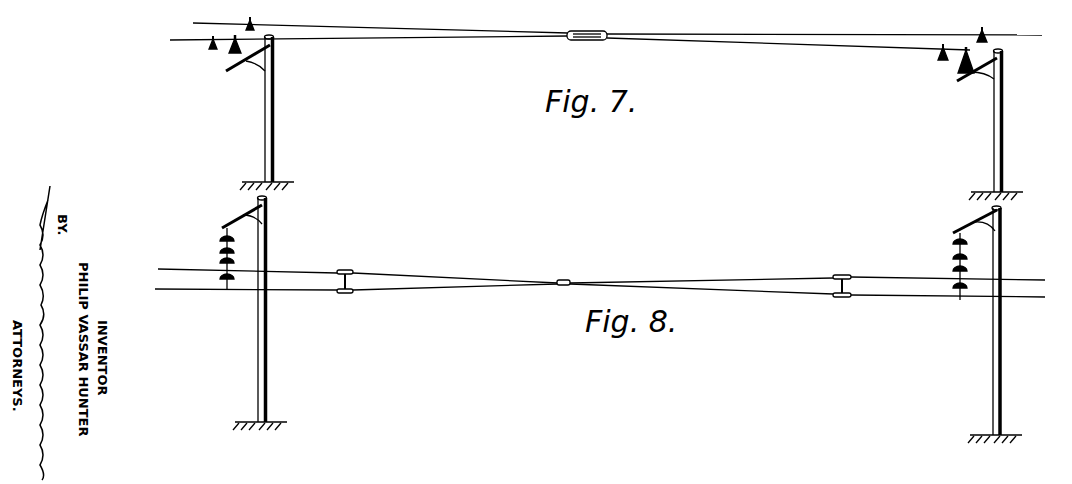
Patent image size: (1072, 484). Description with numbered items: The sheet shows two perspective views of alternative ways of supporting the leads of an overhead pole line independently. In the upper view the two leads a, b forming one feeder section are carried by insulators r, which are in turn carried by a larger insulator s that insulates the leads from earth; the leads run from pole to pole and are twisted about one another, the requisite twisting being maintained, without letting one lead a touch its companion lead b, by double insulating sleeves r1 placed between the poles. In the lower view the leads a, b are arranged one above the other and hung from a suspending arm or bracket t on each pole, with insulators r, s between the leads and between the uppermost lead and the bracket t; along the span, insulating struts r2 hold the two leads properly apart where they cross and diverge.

In FIG. 7, the lead a is at (189, 41).
In FIG. 8, the lead a is at (164, 270).
In FIG. 7, the lead b is at (211, 22).
In FIG. 8, the lead b is at (179, 290).
In FIG. 7, the insulator r is at (211, 51).
In FIG. 8, the insulator r is at (220, 279).
In FIG. 7, the double insulating sleeve r1 is at (586, 40).
In FIG. 8, the insulating strut r2 is at (352, 269).
In FIG. 7, the insulator s is at (237, 55).
In FIG. 8, the insulator s is at (221, 240).
In FIG. 8, the suspending arm or bracket t is at (246, 217).